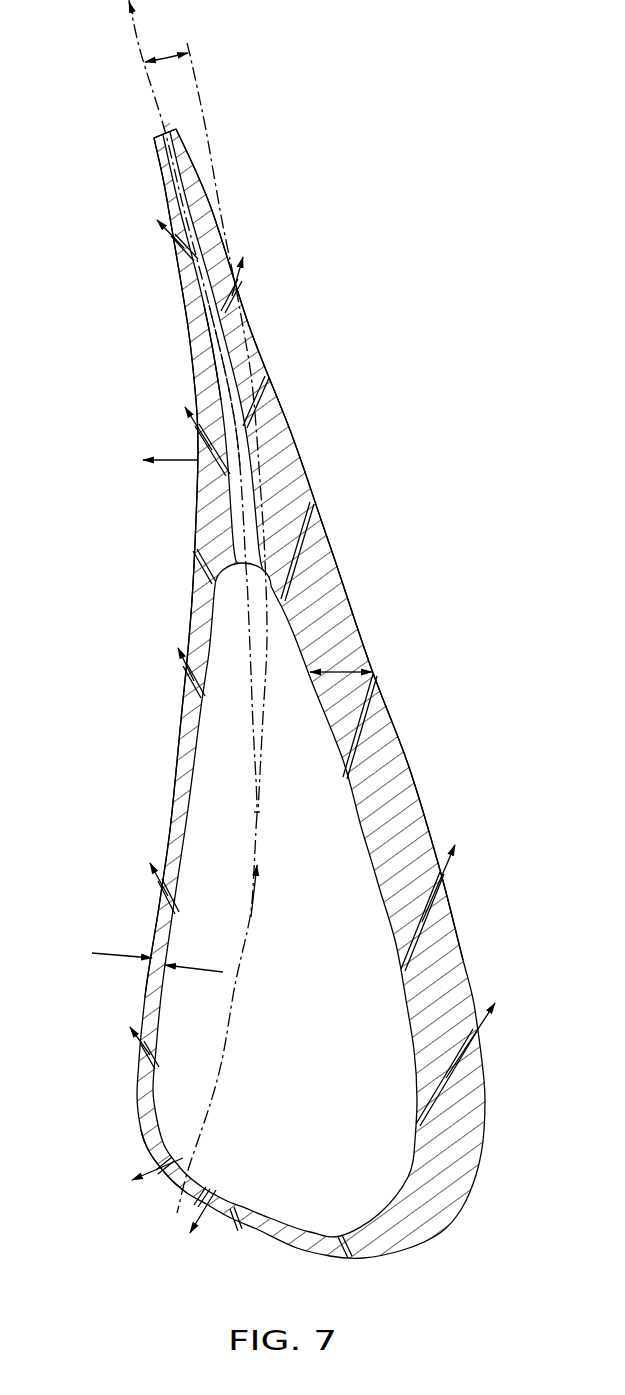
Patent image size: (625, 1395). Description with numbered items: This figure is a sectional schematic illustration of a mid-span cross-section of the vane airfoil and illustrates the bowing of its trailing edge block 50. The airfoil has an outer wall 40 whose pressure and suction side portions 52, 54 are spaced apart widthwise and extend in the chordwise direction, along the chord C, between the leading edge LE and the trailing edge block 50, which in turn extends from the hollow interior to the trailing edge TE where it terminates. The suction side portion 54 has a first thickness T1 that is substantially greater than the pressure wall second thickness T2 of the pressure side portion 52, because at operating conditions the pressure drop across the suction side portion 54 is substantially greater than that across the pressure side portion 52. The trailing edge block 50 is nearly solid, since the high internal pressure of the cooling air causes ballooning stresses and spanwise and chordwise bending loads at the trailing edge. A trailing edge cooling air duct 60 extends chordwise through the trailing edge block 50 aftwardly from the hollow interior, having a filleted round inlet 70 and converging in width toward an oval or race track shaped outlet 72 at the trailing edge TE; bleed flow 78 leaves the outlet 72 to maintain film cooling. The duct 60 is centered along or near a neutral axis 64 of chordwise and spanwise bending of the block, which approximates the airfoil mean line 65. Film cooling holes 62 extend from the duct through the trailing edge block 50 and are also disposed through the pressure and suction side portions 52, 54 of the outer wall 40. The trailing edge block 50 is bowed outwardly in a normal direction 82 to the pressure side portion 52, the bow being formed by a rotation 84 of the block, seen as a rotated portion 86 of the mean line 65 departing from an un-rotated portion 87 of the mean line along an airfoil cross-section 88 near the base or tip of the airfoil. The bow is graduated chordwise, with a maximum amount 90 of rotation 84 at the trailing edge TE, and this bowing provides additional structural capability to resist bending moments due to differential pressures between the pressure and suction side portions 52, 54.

The outer wall 40 is at (450, 922).
The trailing edge block 50 is at (243, 313).
The pressure side portion 52 is at (178, 740).
The suction side portion 54 is at (413, 773).
The trailing edge cooling air ducts 60 is at (248, 500).
The film cooling holes 62 is at (263, 363).
The neutral axis 64 is at (215, 343).
The airfoil mean line 65 is at (257, 827).
The filleted round inlets 70 is at (238, 547).
The outlets 72 is at (163, 134).
The bleed flow 78 is at (137, 30).
The normal direction 82 is at (168, 460).
The rotation 84 is at (160, 53).
The rotated portion 86 is at (222, 385).
The un-rotated portion 87 is at (227, 200).
The airfoil cross-section 88 is at (197, 492).
The maximum amount of rotation 90 is at (157, 100).
The trailing edge TE is at (176, 129).
The leading edge LE is at (168, 1188).
The first thickness T1 is at (343, 668).
The pressure wall second thickness T2 is at (112, 953).
The chord C is at (257, 895).